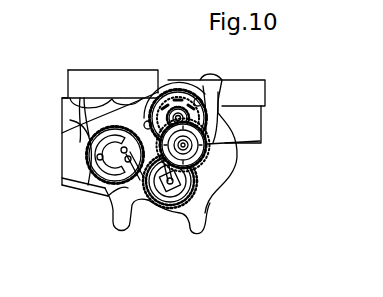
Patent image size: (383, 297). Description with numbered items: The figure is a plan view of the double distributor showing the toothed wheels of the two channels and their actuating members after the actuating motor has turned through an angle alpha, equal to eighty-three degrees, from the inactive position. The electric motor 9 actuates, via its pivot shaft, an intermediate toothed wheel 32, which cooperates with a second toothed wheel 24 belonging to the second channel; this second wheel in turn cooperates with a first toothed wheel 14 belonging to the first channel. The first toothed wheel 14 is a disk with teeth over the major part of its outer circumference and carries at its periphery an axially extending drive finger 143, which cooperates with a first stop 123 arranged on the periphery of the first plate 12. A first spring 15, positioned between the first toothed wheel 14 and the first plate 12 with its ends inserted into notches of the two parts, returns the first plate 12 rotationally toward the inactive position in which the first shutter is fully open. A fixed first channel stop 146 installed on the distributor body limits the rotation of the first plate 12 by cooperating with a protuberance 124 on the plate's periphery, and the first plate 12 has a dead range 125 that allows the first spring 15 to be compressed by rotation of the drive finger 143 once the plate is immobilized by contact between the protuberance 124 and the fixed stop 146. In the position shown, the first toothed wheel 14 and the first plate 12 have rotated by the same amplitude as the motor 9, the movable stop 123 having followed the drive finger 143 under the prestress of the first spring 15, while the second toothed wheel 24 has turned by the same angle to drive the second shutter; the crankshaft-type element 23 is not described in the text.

The electric motor 9 is at (181, 97).
The first plate 12 is at (90, 153).
The first toothed wheel 14 is at (105, 205).
The first spring 15 is at (82, 150).
The crankshaft sprocket 23 is at (172, 185).
The second toothed wheel 24 is at (207, 203).
The intermediate toothed wheel 32 is at (225, 145).
The first stop 123 is at (103, 142).
The protuberance 124 is at (115, 207).
The dead range 125 is at (85, 190).
The drive finger 143 is at (100, 140).
The fixed first channel stop 146 is at (133, 190).